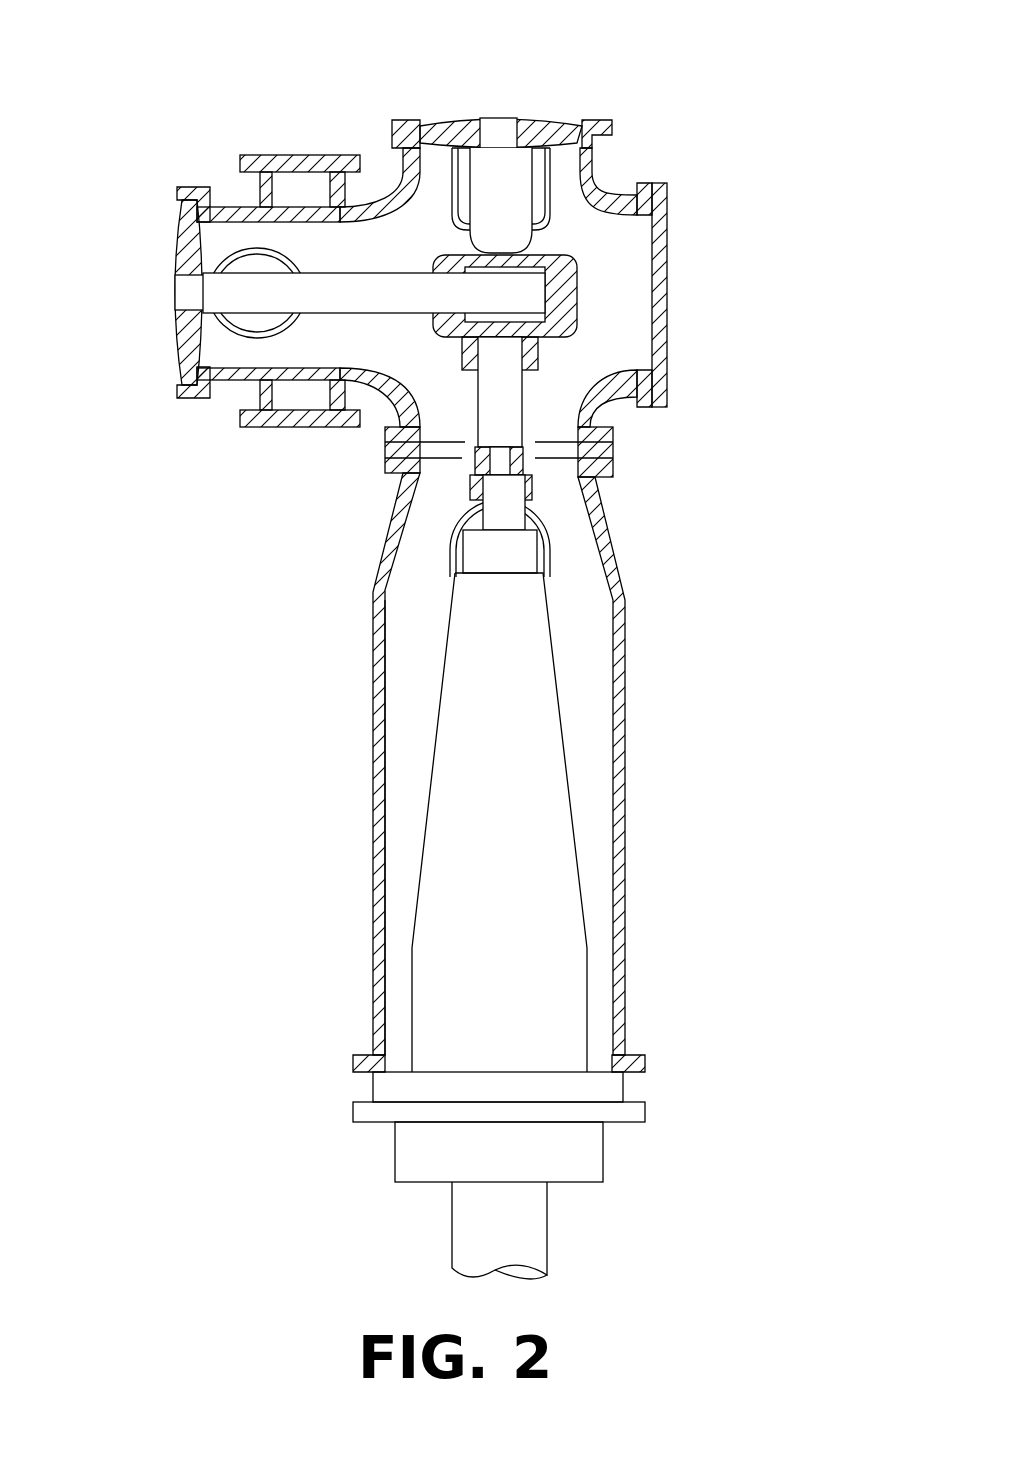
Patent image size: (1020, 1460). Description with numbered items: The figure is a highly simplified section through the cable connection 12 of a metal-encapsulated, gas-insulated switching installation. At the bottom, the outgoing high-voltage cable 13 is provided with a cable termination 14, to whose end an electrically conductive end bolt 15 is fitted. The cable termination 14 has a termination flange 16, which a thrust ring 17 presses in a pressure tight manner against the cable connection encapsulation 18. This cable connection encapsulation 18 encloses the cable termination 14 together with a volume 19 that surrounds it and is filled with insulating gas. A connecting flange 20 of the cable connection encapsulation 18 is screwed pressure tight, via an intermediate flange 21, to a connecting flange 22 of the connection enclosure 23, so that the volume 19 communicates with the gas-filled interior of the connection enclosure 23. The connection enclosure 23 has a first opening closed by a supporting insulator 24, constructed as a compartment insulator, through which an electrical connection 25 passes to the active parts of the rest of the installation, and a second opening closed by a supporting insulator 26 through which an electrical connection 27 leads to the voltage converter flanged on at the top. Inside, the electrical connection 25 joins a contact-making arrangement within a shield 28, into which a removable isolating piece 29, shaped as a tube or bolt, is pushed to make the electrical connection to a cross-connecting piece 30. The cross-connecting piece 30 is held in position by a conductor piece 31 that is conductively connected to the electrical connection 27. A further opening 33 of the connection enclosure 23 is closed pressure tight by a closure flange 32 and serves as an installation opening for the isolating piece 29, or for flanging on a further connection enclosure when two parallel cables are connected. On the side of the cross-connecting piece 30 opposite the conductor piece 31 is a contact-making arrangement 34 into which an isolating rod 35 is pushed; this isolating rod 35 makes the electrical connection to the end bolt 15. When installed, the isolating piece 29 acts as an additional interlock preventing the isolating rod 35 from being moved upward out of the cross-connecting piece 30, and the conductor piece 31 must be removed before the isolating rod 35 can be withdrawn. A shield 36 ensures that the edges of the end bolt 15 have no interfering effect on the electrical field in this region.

The cable connection 12 is at (681, 806).
The high-voltage cable 13 is at (487, 1238).
The cable termination 14 is at (545, 897).
The end bolt 15 is at (512, 553).
The termination flange 16 is at (600, 1088).
The thrust ring 17 is at (600, 1110).
The cable connection encapsulation 18 is at (375, 935).
The volume 19 is at (410, 793).
The connecting flange 20 is at (615, 478).
The intermediate flange 21 is at (613, 452).
The connecting flange 22 is at (613, 430).
The connection enclosure 23 is at (387, 400).
The supporting insulator 24 is at (190, 330).
The electrical connection 25 is at (188, 300).
The supporting insulator 26 is at (530, 140).
The electrical connection 27 is at (512, 125).
The shield 28 is at (238, 250).
The isolating piece 29 is at (330, 290).
The cross-connecting piece 30 is at (453, 273).
The conductor piece 31 is at (487, 180).
The closure flange 32 is at (665, 292).
The opening 33 is at (620, 258).
The contact-making arrangement 34 is at (530, 345).
The isolating rod 35 is at (493, 413).
The shield 36 is at (447, 553).